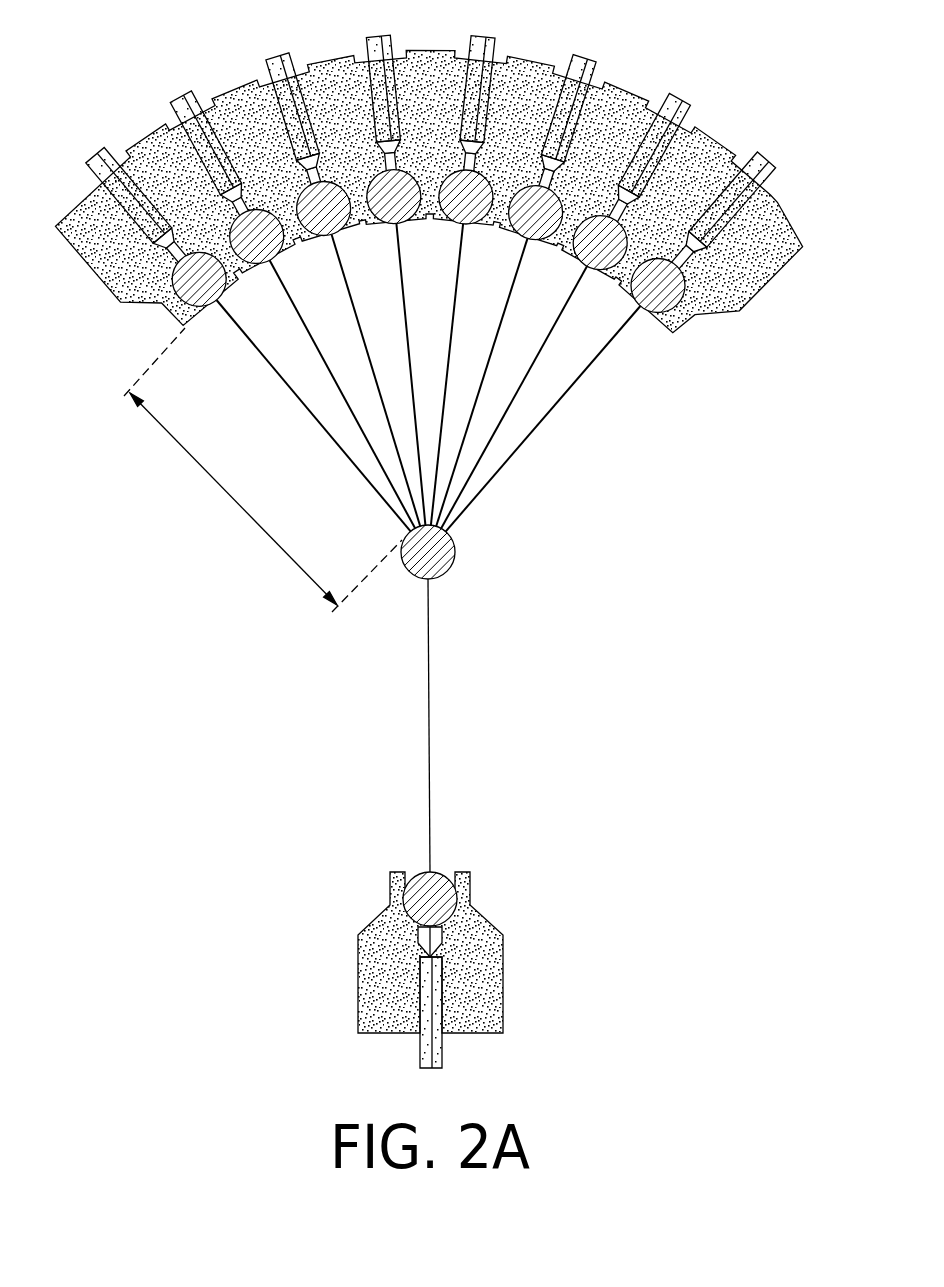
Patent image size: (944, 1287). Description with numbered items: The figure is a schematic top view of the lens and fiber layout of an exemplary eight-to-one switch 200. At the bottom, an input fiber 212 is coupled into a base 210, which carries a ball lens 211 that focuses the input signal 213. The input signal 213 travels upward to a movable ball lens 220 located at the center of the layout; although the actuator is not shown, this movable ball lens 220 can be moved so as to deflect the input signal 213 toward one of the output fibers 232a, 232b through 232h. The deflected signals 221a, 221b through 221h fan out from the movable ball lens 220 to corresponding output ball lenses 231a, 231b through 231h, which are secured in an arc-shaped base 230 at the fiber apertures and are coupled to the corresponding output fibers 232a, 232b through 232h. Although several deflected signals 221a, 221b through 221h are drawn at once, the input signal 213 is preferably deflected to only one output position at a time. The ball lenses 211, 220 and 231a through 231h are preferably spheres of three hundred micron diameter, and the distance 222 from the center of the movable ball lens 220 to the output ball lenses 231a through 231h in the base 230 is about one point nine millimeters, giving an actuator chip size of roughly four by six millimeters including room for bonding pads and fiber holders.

The eight-to-one switch 200 is at (573, 732).
The base 210 is at (503, 975).
The ball lens 211 is at (445, 870).
The input fiber 212 is at (442, 1054).
The input signal 213 is at (431, 732).
The movable ball lens 220 is at (455, 558).
The deflected signal 221a is at (364, 475).
The deflected signal 221b is at (360, 434).
The deflected signal 221h is at (526, 441).
The distance 222 is at (225, 490).
The base 230 is at (685, 323).
The output ball lens 231a is at (202, 306).
The output ball lens 231b is at (262, 266).
The output ball lens 231h is at (648, 315).
The output fiber 232a is at (86, 146).
The output fiber 232b is at (186, 84).
The output fiber 232h is at (763, 152).